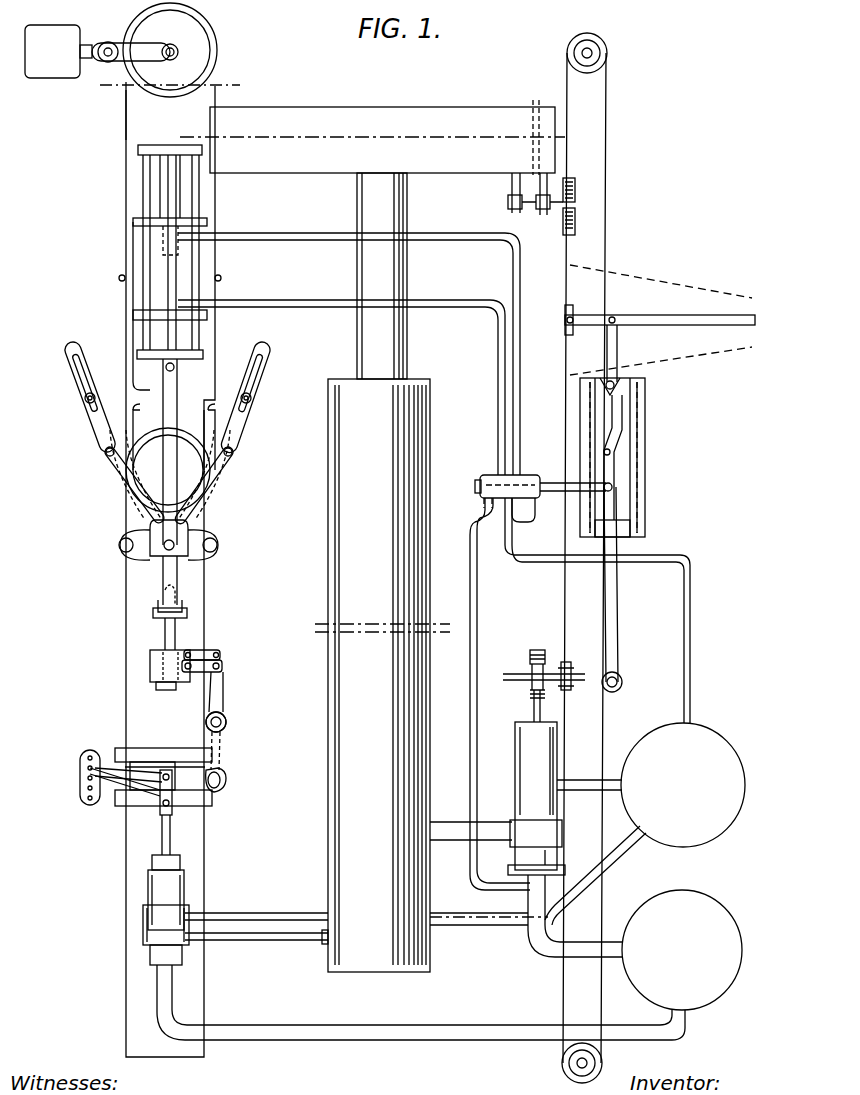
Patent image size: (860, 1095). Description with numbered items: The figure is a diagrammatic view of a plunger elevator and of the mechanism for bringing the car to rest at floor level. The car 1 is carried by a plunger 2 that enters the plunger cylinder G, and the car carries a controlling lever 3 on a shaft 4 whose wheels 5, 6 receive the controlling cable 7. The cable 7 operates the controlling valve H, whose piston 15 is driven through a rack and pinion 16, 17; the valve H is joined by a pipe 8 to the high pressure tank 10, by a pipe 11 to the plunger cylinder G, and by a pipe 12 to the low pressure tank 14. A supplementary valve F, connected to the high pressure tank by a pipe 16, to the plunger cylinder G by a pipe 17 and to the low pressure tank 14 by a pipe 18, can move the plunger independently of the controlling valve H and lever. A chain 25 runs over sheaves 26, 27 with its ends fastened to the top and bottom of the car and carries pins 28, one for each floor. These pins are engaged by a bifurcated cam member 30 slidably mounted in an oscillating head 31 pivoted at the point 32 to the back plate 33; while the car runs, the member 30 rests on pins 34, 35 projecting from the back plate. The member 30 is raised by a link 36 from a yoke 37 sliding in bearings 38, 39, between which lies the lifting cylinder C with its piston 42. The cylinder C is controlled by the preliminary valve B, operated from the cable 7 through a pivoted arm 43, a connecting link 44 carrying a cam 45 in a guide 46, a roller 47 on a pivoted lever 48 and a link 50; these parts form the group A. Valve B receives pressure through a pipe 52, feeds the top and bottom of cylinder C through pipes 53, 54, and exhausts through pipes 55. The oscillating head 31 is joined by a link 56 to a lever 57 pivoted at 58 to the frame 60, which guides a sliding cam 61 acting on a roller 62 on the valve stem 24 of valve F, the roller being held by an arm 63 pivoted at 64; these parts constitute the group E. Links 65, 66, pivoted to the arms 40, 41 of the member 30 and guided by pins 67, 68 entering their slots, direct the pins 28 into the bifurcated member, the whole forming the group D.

The car 1 is at (372, 140).
The plunger 2 is at (382, 276).
The lever 3 is at (533, 115).
The shaft 4 is at (508, 202).
The wheel 5 is at (576, 228).
The wheel 6 is at (575, 192).
The controlling cable 7 is at (566, 252).
The pipe 8 is at (585, 780).
The high pressure tank 10 is at (712, 748).
The pipe 11 is at (447, 842).
The pipe 12 is at (535, 958).
The low pressure tank 14 is at (715, 910).
The piston 15 is at (533, 707).
The rack 16 is at (272, 913).
The pinion 17 is at (275, 942).
The pipe 18 is at (310, 1025).
The valve stem 24 is at (171, 832).
The chain 25 is at (126, 120).
The sheave 26 is at (152, 440).
The sheave 27 is at (218, 44).
The pin 28 is at (120, 282).
The bifurcated cam member 30 is at (150, 500).
The oscillating head 31 is at (150, 632).
The pivot point 32 is at (182, 598).
The back plate 33 is at (133, 368).
The pin 34 is at (122, 555).
The pin 35 is at (222, 552).
The link 36 is at (178, 383).
The yoke 37 is at (163, 145).
The bearing 38 is at (133, 220).
The bearing 39 is at (133, 316).
The arm 40 is at (205, 468).
The arm 41 is at (128, 478).
The piston 42 is at (160, 195).
The pivoted arm 43 is at (585, 315).
The connecting link 44 is at (618, 350).
The cam 45 is at (600, 415).
The guide 46 is at (637, 447).
The roller 47 is at (610, 455).
The pivoted lever 48 is at (612, 582).
The link 50 is at (558, 483).
The pipe 52 is at (537, 558).
The pipe 53 is at (290, 233).
The pipe 54 is at (300, 300).
The pipe 55 is at (480, 510).
The link 56 is at (216, 660).
The lever 57 is at (224, 692).
The pivot 58 is at (228, 722).
The frame 60 is at (183, 748).
The sliding cam 61 is at (145, 790).
The roller 62 is at (165, 770).
The arm 63 is at (118, 780).
The pivot point 64 is at (80, 776).
The link 65 is at (100, 428).
The link 66 is at (238, 428).
The pin 67 is at (85, 397).
The pin 68 is at (252, 392).
The parts A is at (622, 457).
The preliminary valve B is at (501, 475).
The lifting cylinder C is at (135, 272).
The parts D is at (77, 490).
The parts E is at (92, 728).
The supplementary valve F is at (142, 917).
The plunger cylinder G is at (345, 583).
The controlling valve H is at (528, 798).